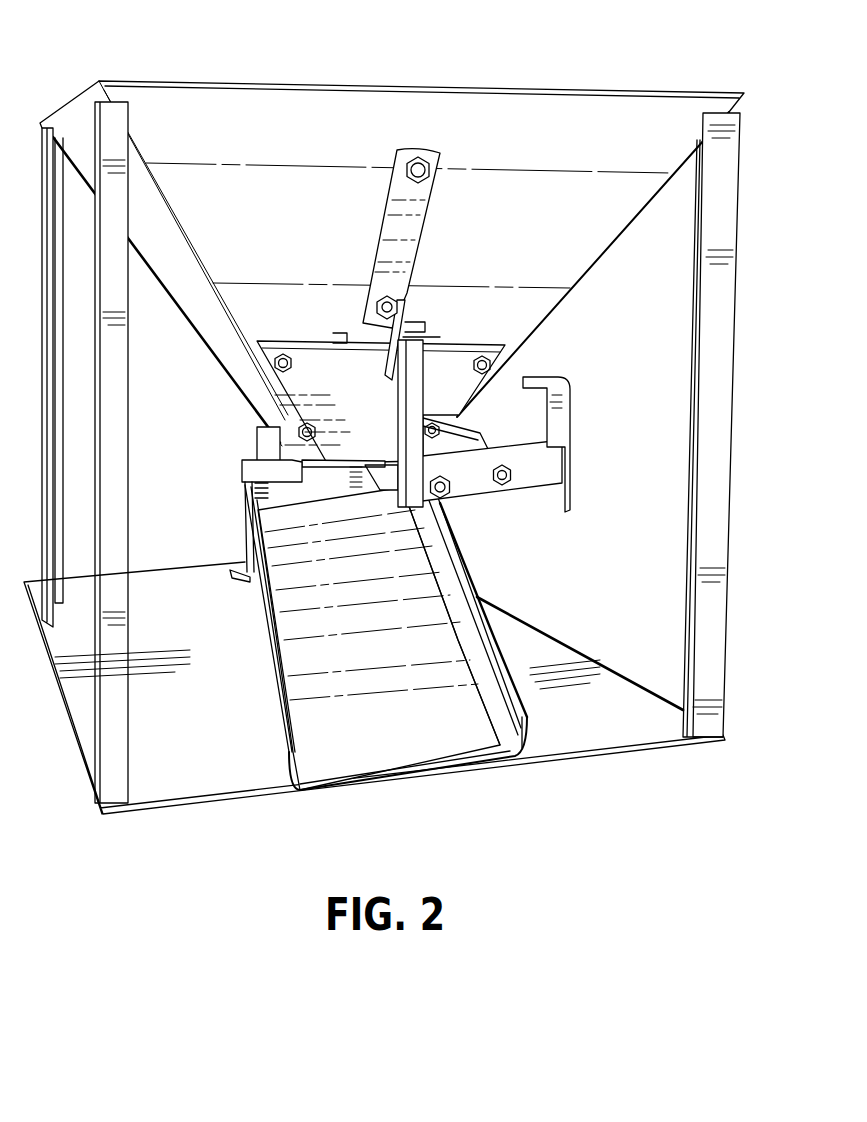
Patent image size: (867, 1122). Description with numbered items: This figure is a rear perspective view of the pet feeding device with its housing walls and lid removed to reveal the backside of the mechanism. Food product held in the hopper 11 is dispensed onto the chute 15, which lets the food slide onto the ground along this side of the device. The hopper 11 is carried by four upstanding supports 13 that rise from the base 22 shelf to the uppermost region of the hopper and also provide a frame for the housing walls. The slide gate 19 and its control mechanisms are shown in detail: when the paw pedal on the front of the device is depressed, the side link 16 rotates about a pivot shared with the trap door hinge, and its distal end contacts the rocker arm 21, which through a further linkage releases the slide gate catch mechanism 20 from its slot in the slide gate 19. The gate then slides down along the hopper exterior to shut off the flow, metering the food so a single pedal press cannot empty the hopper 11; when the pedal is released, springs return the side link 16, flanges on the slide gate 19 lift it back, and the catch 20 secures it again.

The hopper 11 is at (493, 108).
The upstanding supports 13 is at (713, 390).
The chute 15 is at (410, 585).
The side link 16 is at (553, 397).
The slide gate 19 is at (363, 367).
The slide gate catch mechanism 20 is at (420, 343).
The rocker arm 21 is at (477, 480).
The base 22 is at (573, 727).